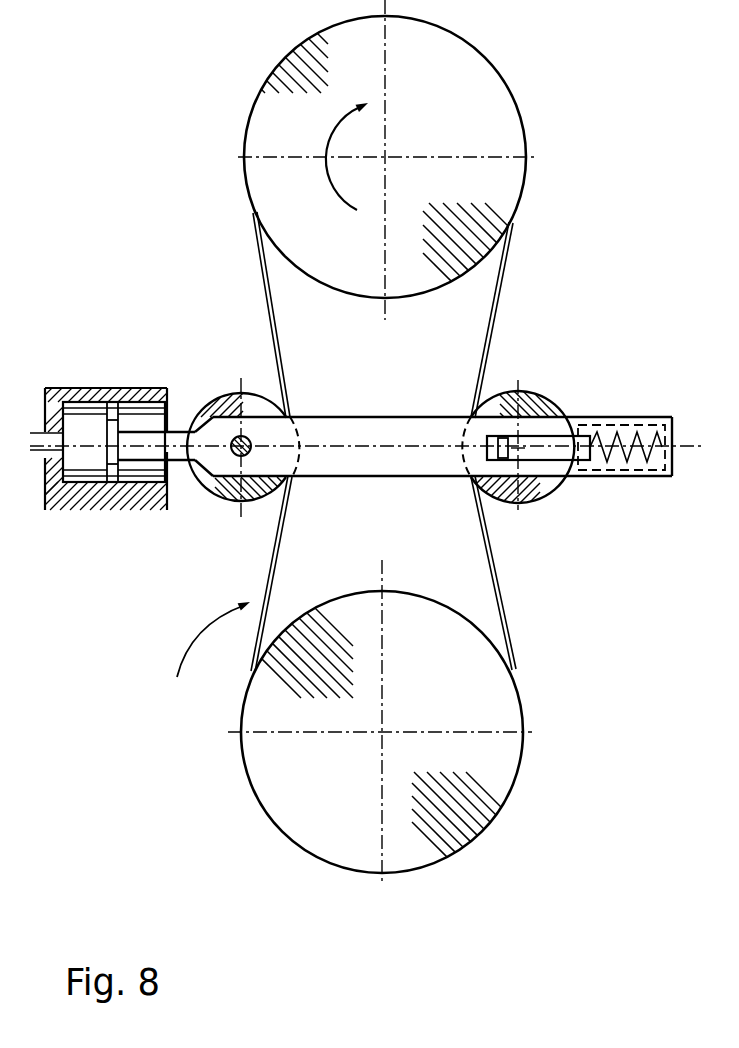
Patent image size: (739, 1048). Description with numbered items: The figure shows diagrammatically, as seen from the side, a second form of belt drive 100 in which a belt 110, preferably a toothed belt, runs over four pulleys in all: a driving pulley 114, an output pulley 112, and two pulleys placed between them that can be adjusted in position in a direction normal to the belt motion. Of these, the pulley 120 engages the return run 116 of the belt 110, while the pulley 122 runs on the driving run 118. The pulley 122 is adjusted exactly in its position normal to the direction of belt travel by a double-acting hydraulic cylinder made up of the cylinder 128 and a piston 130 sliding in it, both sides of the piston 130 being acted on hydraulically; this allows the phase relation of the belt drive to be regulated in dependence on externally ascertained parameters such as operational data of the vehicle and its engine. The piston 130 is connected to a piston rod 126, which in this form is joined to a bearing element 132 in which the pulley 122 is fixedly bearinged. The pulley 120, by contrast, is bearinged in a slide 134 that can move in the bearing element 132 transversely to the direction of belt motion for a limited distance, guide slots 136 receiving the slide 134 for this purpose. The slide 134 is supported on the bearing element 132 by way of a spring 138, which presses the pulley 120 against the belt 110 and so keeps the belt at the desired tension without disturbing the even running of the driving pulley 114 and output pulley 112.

The belt drive 100 is at (204, 658).
The belt 110 is at (262, 322).
The output pulley 112 is at (487, 802).
The driving pulley 114 is at (500, 110).
The return run 116 is at (497, 307).
The driving run 118 is at (264, 262).
The pulley 120 is at (523, 395).
The pulley 122 is at (222, 497).
The piston rod 126 is at (140, 453).
The cylinder 128 is at (78, 500).
The piston 130 is at (105, 402).
The bearing element 132 is at (330, 480).
The slide 134 is at (537, 442).
The guide slots 136 is at (502, 495).
The spring 138 is at (650, 465).